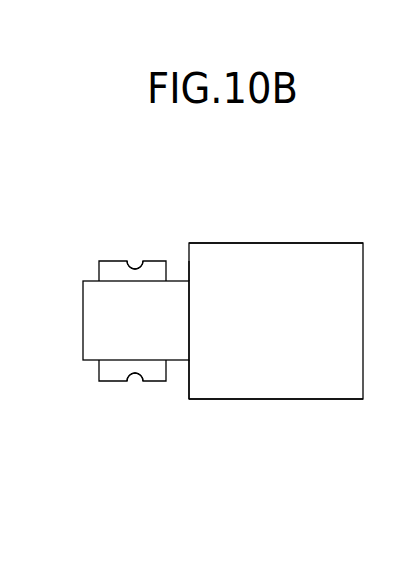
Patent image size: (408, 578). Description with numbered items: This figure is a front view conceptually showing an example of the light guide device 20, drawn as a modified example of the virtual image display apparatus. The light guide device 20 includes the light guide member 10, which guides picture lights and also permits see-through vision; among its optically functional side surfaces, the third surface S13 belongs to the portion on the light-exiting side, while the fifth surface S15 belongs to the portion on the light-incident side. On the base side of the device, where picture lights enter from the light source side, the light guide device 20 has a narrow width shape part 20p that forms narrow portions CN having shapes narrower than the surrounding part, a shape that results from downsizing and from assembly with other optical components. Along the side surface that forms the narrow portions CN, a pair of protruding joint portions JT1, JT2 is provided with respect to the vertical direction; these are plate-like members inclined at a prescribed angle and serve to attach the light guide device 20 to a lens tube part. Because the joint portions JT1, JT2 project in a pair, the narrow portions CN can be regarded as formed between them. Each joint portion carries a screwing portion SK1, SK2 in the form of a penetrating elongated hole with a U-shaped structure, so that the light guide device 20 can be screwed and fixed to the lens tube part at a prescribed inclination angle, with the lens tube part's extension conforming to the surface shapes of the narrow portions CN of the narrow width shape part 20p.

The light guide member 10 is at (275, 262).
The light guide device 20 is at (316, 220).
The third surface S13 is at (277, 328).
The fifth surface S15 is at (112, 337).
The joint portion JT1 is at (116, 264).
The joint portion JT2 is at (118, 381).
The screwing portion SK1 is at (135, 262).
The screwing portion SK2 is at (135, 381).
The narrow portion CN is at (178, 274).
The narrow width shape part 20p is at (176, 417).